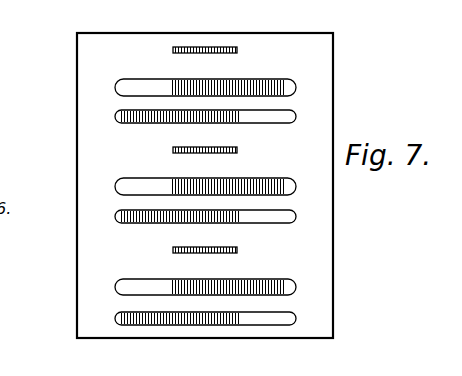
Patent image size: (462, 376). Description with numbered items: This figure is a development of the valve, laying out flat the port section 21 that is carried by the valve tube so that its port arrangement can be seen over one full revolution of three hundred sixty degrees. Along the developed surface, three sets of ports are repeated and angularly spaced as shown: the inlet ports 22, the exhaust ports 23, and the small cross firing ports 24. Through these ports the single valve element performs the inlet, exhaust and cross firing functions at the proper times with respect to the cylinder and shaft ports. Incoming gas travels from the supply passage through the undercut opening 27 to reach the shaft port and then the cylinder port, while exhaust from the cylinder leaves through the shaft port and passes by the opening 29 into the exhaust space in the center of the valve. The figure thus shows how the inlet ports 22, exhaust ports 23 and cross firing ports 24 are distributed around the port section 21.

The port section 21 is at (333, 237).
The inlet ports 22 is at (118, 117).
The exhaust ports 23 is at (275, 82).
The cross firing ports 24 is at (205, 47).
The undercut opening 27 is at (287, 115).
The opening 29 is at (128, 85).